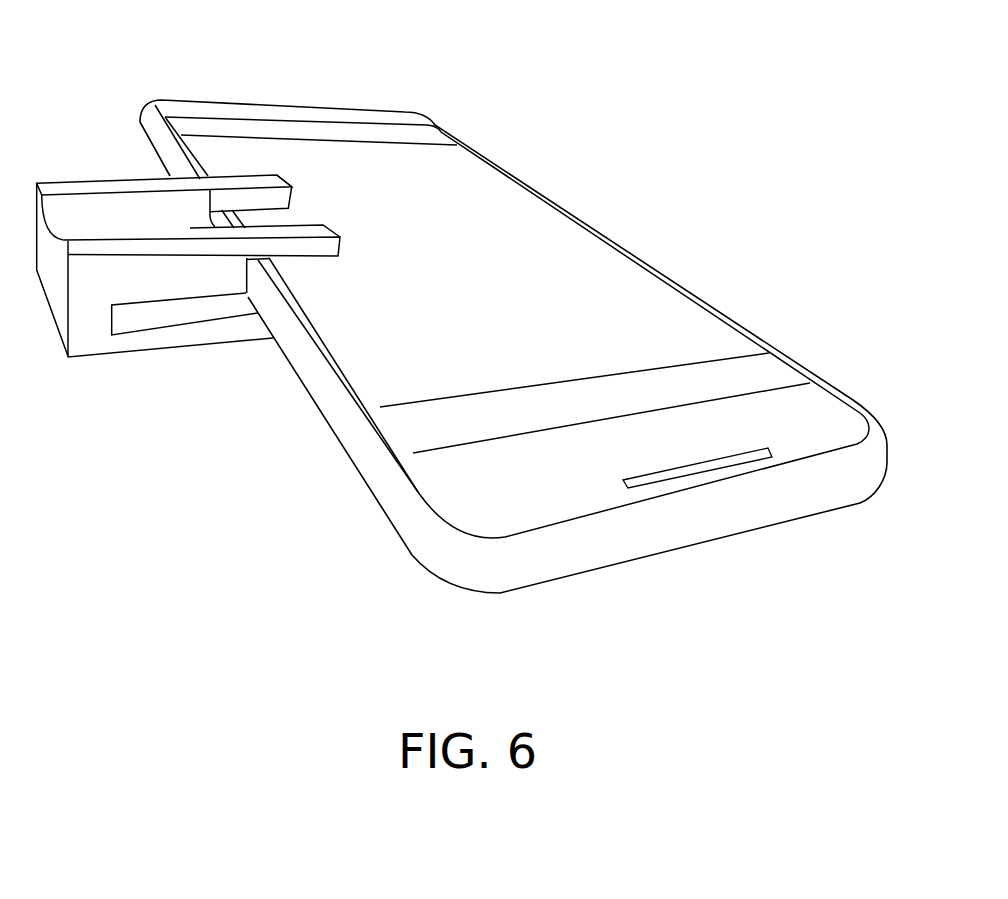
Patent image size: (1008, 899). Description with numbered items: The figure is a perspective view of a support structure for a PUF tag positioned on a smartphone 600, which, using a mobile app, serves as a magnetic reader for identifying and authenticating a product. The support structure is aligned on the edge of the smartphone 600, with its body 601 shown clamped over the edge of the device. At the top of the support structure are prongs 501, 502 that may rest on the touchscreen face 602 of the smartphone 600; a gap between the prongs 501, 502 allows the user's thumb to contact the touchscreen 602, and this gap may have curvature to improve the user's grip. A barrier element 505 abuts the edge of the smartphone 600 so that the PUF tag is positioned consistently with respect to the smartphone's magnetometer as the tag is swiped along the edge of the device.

The smartphone 600 is at (468, 127).
The device housing 601 is at (322, 413).
The touchscreen face 602 is at (557, 337).
The barrier element 505 is at (233, 275).
The prong 501 is at (275, 177).
The prong 502 is at (323, 226).